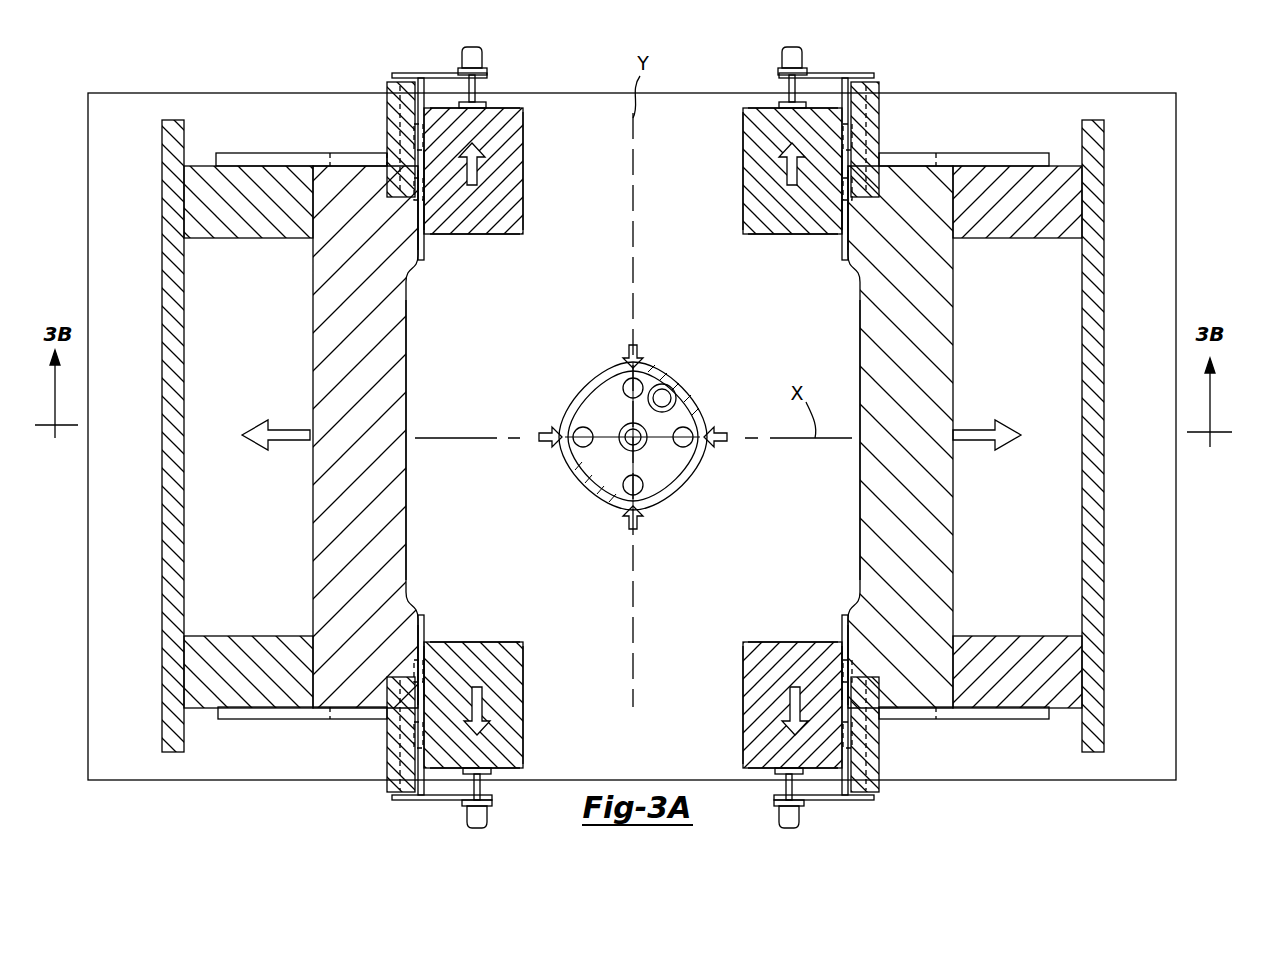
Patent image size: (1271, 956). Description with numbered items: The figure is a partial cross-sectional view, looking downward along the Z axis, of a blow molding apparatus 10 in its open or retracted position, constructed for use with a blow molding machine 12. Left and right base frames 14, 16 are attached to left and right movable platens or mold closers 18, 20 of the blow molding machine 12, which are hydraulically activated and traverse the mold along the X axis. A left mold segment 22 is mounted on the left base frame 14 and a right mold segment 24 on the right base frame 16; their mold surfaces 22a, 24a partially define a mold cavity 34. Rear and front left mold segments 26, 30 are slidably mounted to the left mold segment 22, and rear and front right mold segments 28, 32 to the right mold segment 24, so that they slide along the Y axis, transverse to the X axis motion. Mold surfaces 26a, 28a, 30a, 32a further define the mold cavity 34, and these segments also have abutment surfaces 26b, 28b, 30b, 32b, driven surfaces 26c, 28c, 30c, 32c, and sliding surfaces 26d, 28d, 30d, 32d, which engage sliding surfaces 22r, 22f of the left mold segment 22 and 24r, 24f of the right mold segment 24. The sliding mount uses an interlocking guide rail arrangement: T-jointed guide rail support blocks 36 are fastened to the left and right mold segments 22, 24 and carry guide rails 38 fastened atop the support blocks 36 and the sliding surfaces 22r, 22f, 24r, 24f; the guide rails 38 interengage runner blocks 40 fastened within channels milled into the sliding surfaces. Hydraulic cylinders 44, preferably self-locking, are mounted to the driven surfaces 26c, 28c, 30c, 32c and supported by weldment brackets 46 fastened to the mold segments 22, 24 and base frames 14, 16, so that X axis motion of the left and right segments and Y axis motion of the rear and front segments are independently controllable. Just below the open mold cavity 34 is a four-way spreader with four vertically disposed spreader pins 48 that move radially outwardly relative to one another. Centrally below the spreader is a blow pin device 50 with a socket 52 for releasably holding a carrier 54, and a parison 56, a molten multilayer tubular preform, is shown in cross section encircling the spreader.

The blow molding apparatus 10 is at (1200, 213).
The blow molding machine 12 is at (1176, 147).
The left base frame 14 is at (232, 212).
The right base frame 16 is at (1014, 210).
The left mold closer 18 is at (162, 425).
The right mold closer 20 is at (1104, 425).
The left mold segment 22 is at (346, 422).
The mold surface of left mold segment 22a is at (406, 362).
The rear sliding surface of left mold segment 22r is at (420, 172).
The front sliding surface of left mold segment 22f is at (428, 697).
The right mold segment 24 is at (902, 405).
The mold surface of right mold segment 24a is at (860, 493).
The rear sliding surface of right mold segment 24r is at (846, 172).
The front sliding surface of right mold segment 24f is at (840, 697).
The rear left mold segment 26 is at (508, 137).
The mold surface of rear left mold segment 26a is at (505, 234).
The abutment surface of rear left mold segment 26b is at (523, 162).
The driven surface of rear left mold segment 26c is at (495, 108).
The sliding surface of rear left mold segment 26d is at (418, 212).
The rear right mold segment 28 is at (743, 135).
The mold surface of rear right mold segment 28a is at (755, 234).
The abutment surface of rear right mold segment 28b is at (743, 162).
The driven surface of rear right mold segment 28c is at (770, 108).
The sliding surface of rear right mold segment 28d is at (848, 212).
The front left mold segment 30 is at (523, 728).
The mold surface of front left mold segment 30a is at (492, 643).
The abutment surface of front left mold segment 30b is at (523, 680).
The driven surface of front left mold segment 30c is at (505, 768).
The sliding surface of front left mold segment 30d is at (410, 662).
The front right mold segment 32 is at (743, 728).
The mold surface of front right mold segment 32a is at (765, 643).
The abutment surface of front right mold segment 32b is at (743, 680).
The driven surface of front right mold segment 32c is at (765, 768).
The sliding surface of front right mold segment 32d is at (852, 665).
The mold cavity 34 is at (524, 482).
The guide rail support block 36 is at (387, 110).
The guide rail 38 is at (423, 82).
The runner block 40 is at (400, 129).
The hydraulic cylinder 44 is at (482, 55).
The weldment bracket 46 is at (355, 158).
The spreader pin 48 is at (627, 396).
The blow pin device 50 is at (592, 482).
The socket 52 is at (624, 448).
The carrier 54 is at (672, 408).
The parison 56 is at (668, 385).